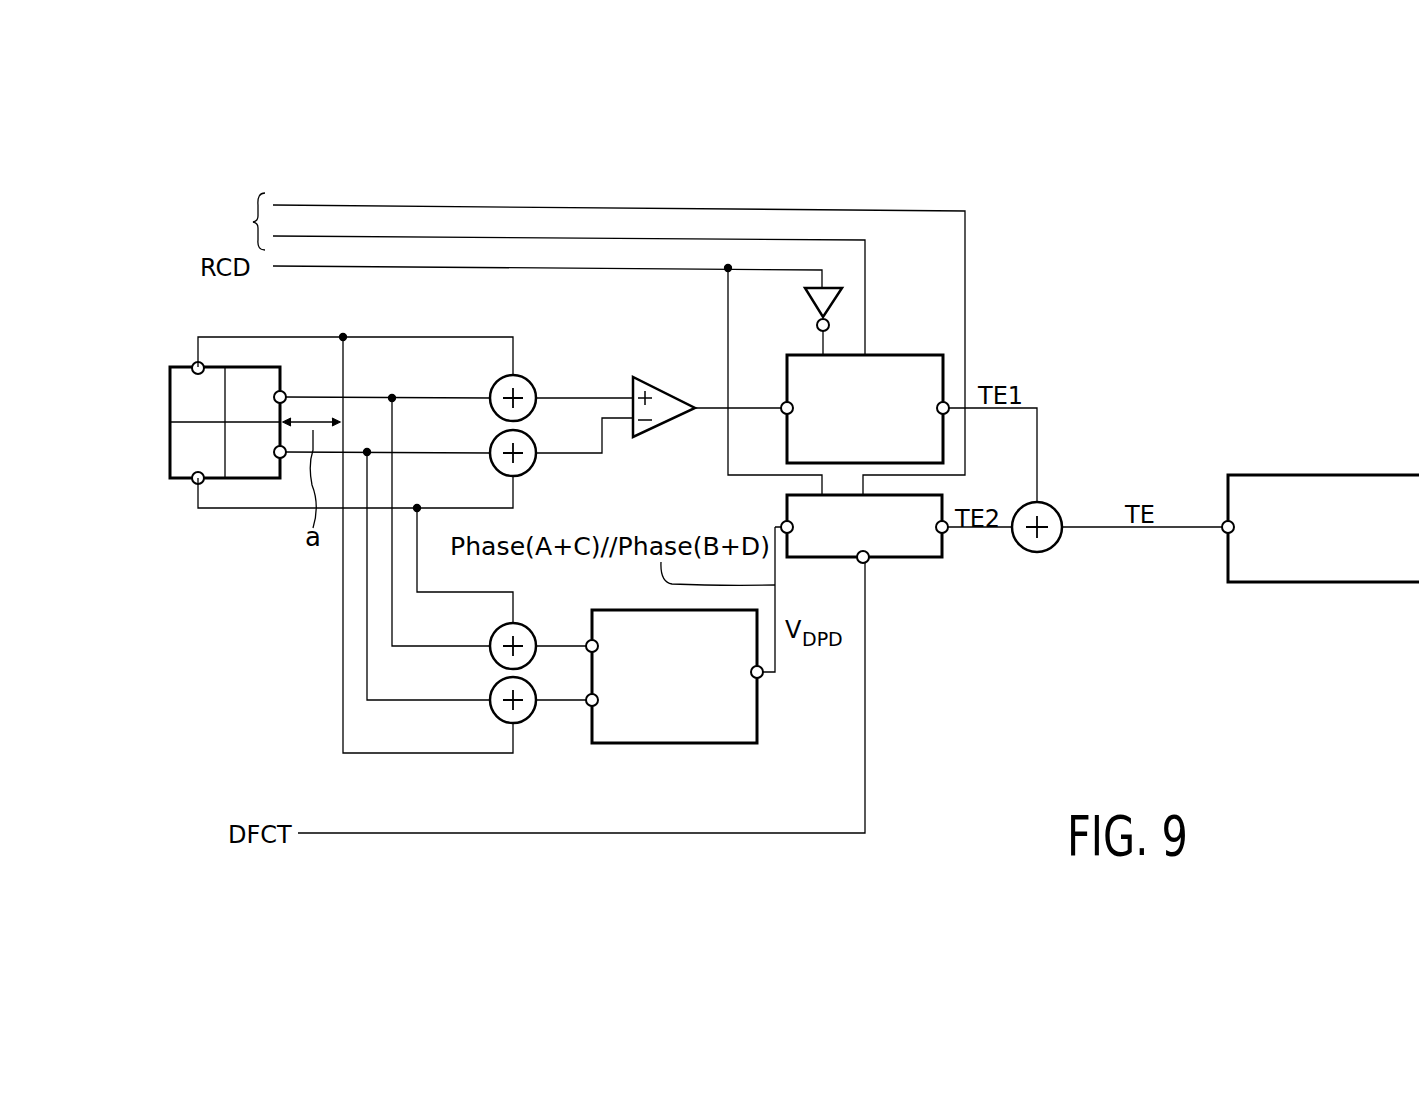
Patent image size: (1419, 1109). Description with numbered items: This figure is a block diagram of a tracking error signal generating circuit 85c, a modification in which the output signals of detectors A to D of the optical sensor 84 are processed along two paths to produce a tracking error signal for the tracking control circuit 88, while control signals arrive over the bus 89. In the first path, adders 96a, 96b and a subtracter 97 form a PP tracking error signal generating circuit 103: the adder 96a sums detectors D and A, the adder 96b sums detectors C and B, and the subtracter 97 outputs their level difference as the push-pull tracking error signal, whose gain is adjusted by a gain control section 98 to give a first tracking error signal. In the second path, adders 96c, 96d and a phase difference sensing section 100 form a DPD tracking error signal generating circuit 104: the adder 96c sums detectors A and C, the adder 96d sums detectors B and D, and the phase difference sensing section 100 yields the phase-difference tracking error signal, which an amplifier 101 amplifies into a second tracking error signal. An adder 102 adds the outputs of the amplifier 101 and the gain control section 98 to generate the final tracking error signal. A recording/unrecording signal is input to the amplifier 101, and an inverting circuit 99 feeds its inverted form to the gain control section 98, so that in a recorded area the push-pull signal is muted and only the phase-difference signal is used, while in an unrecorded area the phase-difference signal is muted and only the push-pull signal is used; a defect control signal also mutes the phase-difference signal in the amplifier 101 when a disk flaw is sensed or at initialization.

The optical sensor 84 is at (170, 409).
The tracking error signal generating circuit 85c is at (310, 604).
The tracking control circuit 88 is at (1320, 474).
The bus 89 is at (523, 344).
The adder 96a is at (514, 374).
The adder 96b is at (570, 432).
The adder 96c is at (534, 627).
The adder 96d is at (529, 721).
The subtracter 97 is at (648, 439).
The gain control section 98 is at (895, 356).
The inverting circuit 99 is at (806, 308).
The phase difference sensing section 100 is at (757, 720).
The amplifier 101 is at (910, 561).
The adder 102 is at (1037, 552).
The PP tracking error signal generating circuit 103 is at (592, 504).
The DPD tracking error signal generating circuit 104 is at (600, 811).